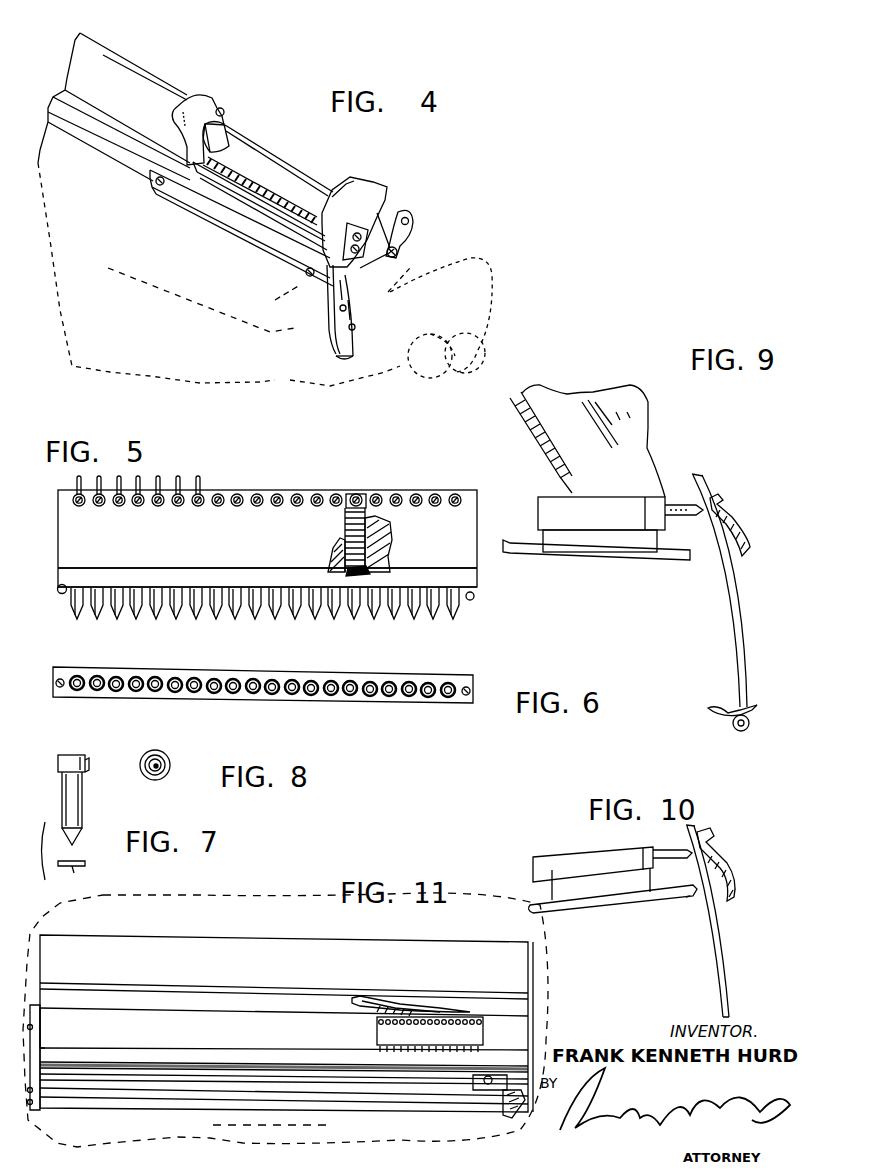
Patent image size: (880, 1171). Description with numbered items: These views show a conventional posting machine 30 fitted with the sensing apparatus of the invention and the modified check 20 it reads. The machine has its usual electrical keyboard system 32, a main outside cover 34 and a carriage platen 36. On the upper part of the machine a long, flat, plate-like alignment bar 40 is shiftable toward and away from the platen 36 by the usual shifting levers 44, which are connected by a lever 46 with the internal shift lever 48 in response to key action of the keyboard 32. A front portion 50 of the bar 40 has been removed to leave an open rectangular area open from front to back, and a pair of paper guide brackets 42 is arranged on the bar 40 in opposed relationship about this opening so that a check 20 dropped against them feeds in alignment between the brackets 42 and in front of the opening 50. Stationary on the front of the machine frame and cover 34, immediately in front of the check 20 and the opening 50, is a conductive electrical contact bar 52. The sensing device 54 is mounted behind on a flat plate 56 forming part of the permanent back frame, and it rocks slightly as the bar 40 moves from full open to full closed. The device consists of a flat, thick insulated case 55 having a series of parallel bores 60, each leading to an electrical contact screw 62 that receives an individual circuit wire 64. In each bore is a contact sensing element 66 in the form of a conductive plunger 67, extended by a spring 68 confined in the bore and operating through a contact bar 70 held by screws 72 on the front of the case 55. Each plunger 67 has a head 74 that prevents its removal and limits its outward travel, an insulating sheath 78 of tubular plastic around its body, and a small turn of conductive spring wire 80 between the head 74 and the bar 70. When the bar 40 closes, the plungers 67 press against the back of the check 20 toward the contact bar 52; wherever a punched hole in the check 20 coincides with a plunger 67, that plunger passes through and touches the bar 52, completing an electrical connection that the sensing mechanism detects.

In FIG. 9, the check 20 is at (733, 600).
In FIG. 10, the check 20 is at (725, 948).
In FIG. 4, the posting machine 30 is at (482, 278).
In FIG. 4, the electrical keyboard system 32 is at (74, 366).
In FIG. 4, the main outside cover 34 is at (446, 293).
In FIG. 11, the carriage platen 36 is at (70, 1062).
In FIG. 4, the alignment bar 40 is at (288, 173).
In FIG. 11, the alignment bar 40 is at (135, 1072).
In FIG. 4, the paper guide bracket 42 is at (190, 106).
In FIG. 9, the paper guide bracket 42 is at (645, 424).
In FIG. 11, the paper guide bracket 42 is at (503, 1110).
In FIG. 4, the shifting lever 44 is at (398, 250).
In FIG. 4, the lever 46 is at (347, 308).
In FIG. 4, the internal shift lever 48 is at (336, 350).
In FIG. 4, the front portion 50 is at (222, 152).
In FIG. 4, the conductive electrical contact bar 52 is at (213, 214).
In FIG. 9, the conductive electrical contact bar 52 is at (745, 520).
In FIG. 10, the conductive electrical contact bar 52 is at (737, 866).
In FIG. 11, the conductive electrical contact bar 52 is at (420, 1106).
In FIG. 11, the sensing device 54 is at (377, 1034).
In FIG. 5, the case 55 is at (452, 546).
In FIG. 9, the case 55 is at (598, 527).
In FIG. 10, the case 55 is at (560, 866).
In FIG. 9, the flat plate 56 is at (572, 557).
In FIG. 10, the flat plate 56 is at (590, 905).
In FIG. 11, the flat plate 56 is at (281, 1023).
In FIG. 5, the bore 60 is at (345, 532).
In FIG. 5, the electrical contact screw 62 is at (258, 492).
In FIG. 11, the electrical contact screw 62 is at (484, 1026).
In FIG. 5, the circuit wire 64 is at (78, 480).
In FIG. 11, the circuit wire 64 is at (462, 1008).
In FIG. 5, the contact sensing element 66 is at (336, 552).
In FIG. 5, the plunger 67 is at (330, 620).
In FIG. 6, the plunger 67 is at (433, 698).
In FIG. 7, the plunger 67 is at (77, 836).
In FIG. 8, the plunger 67 is at (165, 765).
In FIG. 11, the plunger 67 is at (378, 1050).
In FIG. 5, the spring 68 is at (384, 526).
In FIG. 5, the contact bar 70 is at (188, 578).
In FIG. 10, the contact bar 70 is at (655, 850).
In FIG. 5, the screw 72 is at (64, 586).
In FIG. 6, the screw 72 is at (470, 690).
In FIG. 9, the screw 72 is at (650, 500).
In FIG. 5, the head 74 is at (384, 562).
In FIG. 7, the head 74 is at (88, 762).
In FIG. 8, the head 74 is at (166, 777).
In FIG. 7, the insulating sheath 78 is at (78, 812).
In FIG. 8, the insulating sheath 78 is at (164, 755).
In FIG. 7, the conductive spring wire 80 is at (82, 868).